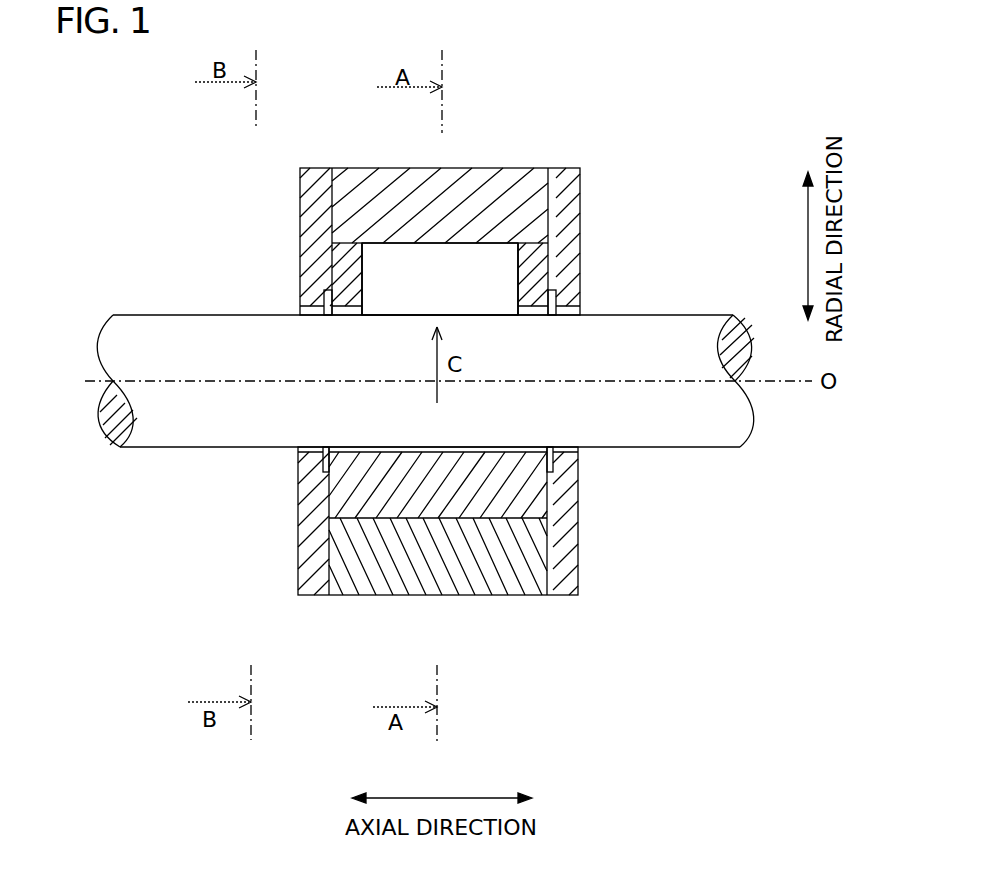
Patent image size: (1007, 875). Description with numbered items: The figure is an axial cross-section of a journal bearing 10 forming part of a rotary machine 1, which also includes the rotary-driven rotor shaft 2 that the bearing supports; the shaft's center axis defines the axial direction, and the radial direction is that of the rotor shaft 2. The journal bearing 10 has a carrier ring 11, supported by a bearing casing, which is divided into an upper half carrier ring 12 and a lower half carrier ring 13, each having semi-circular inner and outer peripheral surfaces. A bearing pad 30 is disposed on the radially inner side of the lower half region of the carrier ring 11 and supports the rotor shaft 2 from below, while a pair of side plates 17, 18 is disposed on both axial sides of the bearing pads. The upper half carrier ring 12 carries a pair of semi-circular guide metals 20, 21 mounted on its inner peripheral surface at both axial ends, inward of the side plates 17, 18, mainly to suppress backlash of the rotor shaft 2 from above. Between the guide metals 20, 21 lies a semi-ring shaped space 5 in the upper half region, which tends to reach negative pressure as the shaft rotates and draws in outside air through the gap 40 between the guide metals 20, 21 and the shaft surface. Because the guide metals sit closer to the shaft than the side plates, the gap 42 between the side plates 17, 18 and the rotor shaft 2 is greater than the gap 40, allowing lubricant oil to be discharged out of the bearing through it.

The rotary machine 1 is at (662, 48).
The rotor shaft 2 is at (705, 330).
The semi-ring shaped space 5 is at (388, 258).
The journal bearing 10 is at (628, 211).
The carrier ring 11 is at (510, 187).
The upper half carrier ring 12 is at (328, 205).
The lower half carrier ring 13 is at (442, 577).
The side plate 17 is at (306, 258).
The side plate 18 is at (573, 253).
The guide metal 20 is at (363, 298).
The guide metal 21 is at (518, 298).
The bearing pad 30 is at (560, 489).
The gap 40 is at (321, 301).
The gap 42 is at (562, 302).